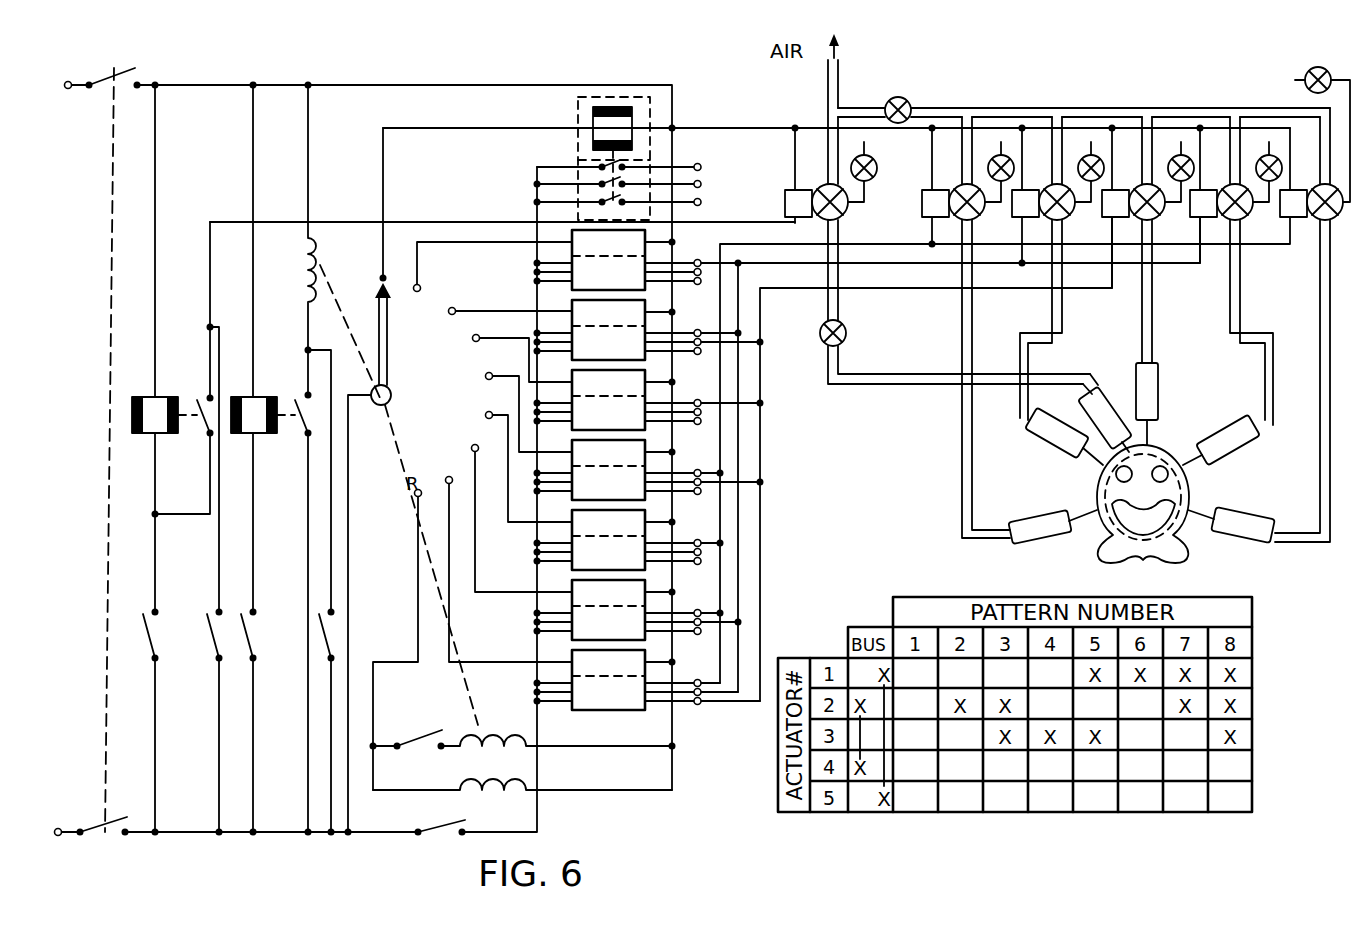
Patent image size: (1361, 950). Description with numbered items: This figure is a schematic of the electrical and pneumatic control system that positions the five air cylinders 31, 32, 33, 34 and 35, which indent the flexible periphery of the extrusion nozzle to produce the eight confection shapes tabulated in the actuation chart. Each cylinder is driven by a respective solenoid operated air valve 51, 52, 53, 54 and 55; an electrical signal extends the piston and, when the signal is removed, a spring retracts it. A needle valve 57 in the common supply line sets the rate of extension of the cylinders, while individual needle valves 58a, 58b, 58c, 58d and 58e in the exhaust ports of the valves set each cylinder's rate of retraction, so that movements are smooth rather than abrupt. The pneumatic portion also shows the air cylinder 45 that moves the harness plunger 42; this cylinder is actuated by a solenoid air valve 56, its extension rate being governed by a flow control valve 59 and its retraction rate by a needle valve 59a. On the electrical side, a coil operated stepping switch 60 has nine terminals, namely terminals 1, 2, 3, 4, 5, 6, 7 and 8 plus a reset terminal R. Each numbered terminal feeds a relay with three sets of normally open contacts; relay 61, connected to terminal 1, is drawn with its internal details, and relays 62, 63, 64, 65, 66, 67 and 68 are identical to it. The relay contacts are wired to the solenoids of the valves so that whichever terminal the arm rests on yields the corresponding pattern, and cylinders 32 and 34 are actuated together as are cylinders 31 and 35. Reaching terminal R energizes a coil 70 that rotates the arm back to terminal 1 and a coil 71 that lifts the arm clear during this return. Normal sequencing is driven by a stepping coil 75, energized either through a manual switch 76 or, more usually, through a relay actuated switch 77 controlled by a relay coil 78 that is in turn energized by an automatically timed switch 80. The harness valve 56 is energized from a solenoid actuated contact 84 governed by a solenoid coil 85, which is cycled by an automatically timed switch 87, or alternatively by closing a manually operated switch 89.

The switch terminal 1 is at (386, 285).
The switch terminal 2 is at (491, 281).
The switch terminal 3 is at (505, 325).
The switch terminal 4 is at (514, 359).
The switch terminal 5 is at (519, 410).
The switch terminal 6 is at (521, 464).
The switch terminal 7 is at (514, 512).
The switch terminal 8 is at (504, 560).
The air cylinder 31 is at (1052, 538).
The air cylinder 32 is at (1060, 439).
The air cylinder 33 is at (1159, 404).
The air cylinder 34 is at (1221, 437).
The air cylinder 35 is at (1231, 518).
The harness plunger 42 is at (1091, 441).
The air cylinder 45 is at (1100, 392).
The solenoid operated air valve 51 is at (979, 218).
The solenoid operated air valve 52 is at (1069, 218).
The solenoid operated air valve 53 is at (1159, 218).
The solenoid operated air valve 54 is at (1247, 218).
The solenoid operated air valve 55 is at (1339, 217).
The solenoid air valve 56 is at (843, 217).
The needle valve 57 is at (905, 98).
The needle valve 58a is at (997, 155).
The needle valve 58b is at (1086, 155).
The needle valve 58c is at (1176, 155).
The needle valve 58d is at (1264, 155).
The needle valve 58e is at (1322, 62).
The flow control valve 59 is at (847, 336).
The needle valve 59a is at (877, 175).
The stepping switch 60 is at (377, 306).
The relay 61 is at (628, 108).
The relay 62 is at (632, 250).
The relay 63 is at (632, 320).
The relay 64 is at (632, 390).
The relay 65 is at (632, 460).
The relay 66 is at (632, 530).
The relay 67 is at (632, 600).
The relay 68 is at (632, 670).
The coil 70 is at (518, 735).
The coil 71 is at (480, 785).
The stepping coil 75 is at (306, 246).
The manual switch 76 is at (327, 645).
The relay actuated switch 77 is at (296, 432).
The relay coil 78 is at (250, 397).
The automatically timed switch 80 is at (245, 630).
The solenoid actuated contact 84 is at (197, 432).
The solenoid coil 85 is at (149, 397).
The automatically timed switch 87 is at (144, 637).
The manually operated switch 89 is at (208, 637).